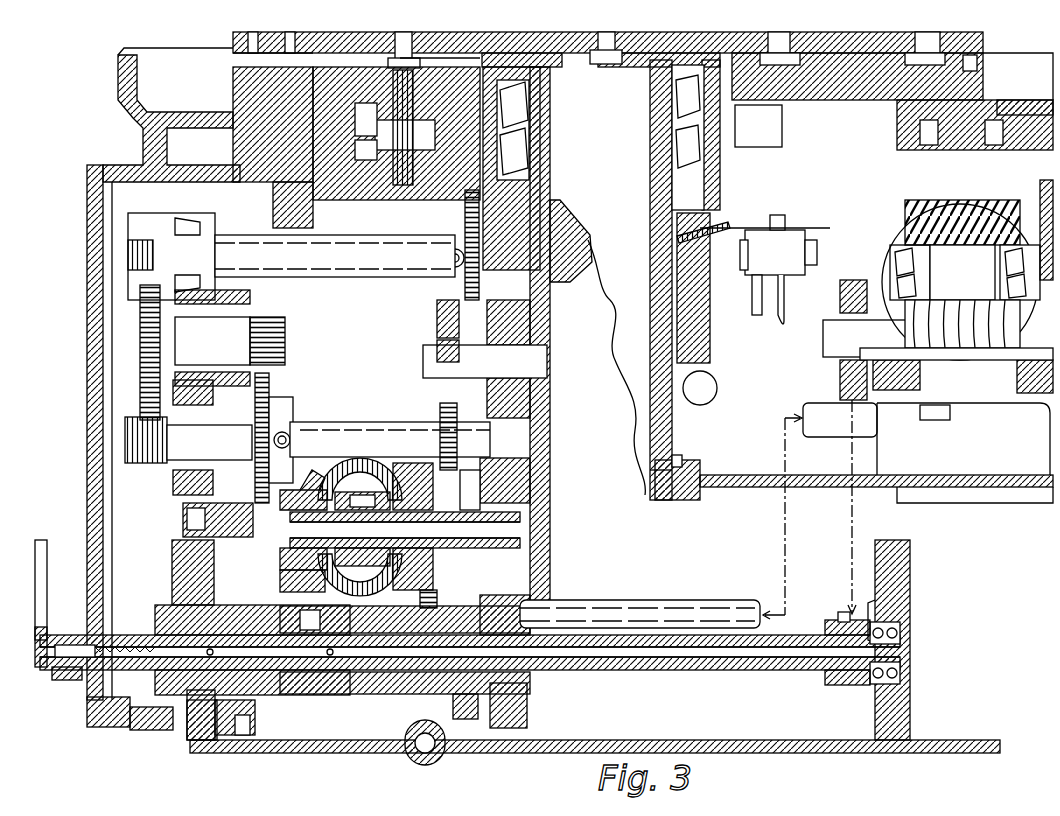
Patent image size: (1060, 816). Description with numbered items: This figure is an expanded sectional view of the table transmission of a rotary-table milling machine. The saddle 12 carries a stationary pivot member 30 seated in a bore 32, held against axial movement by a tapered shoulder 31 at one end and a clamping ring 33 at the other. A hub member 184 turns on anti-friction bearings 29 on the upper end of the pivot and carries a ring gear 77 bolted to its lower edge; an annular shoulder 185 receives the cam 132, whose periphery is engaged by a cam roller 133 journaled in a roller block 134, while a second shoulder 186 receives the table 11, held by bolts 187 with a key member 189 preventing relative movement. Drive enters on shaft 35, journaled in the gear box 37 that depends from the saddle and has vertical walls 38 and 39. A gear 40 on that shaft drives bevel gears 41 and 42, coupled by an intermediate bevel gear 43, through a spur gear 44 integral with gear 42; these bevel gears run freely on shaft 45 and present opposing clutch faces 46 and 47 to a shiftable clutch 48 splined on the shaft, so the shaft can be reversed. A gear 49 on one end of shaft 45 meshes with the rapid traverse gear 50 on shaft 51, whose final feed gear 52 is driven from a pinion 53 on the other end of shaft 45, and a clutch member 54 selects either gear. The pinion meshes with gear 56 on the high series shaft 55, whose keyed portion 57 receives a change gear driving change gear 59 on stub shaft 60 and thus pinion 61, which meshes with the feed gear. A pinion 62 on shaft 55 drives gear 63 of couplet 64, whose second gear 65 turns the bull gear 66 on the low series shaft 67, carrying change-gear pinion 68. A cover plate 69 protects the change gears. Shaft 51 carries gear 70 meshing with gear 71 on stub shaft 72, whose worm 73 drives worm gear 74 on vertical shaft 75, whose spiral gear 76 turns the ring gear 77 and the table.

The table 11 is at (472, 40).
The saddle 12 is at (117, 88).
The anti-friction bearings 29 is at (540, 160).
The stationary pivot member 30 is at (555, 190).
The tapered shoulder 31 is at (665, 225).
The bore 32 is at (655, 438).
The clamping ring 33 is at (690, 490).
The shaft 35 is at (712, 606).
The gear box or transmission housing 37 is at (317, 742).
The vertical wall 38 is at (185, 580).
The vertical wall 39 is at (535, 590).
The gear 40 is at (418, 594).
The bevel gear 41 is at (315, 470).
The bevel gear 42 is at (405, 468).
The intermediate bevel gear 43 is at (338, 462).
The spur gear 44 is at (442, 424).
The shaft 45 is at (195, 525).
The clutch face 46 is at (335, 580).
The clutch face 47 is at (375, 470).
The longitudinally shiftable clutch 48 is at (358, 580).
The gear 49 is at (520, 463).
The rapid traverse gear 50 is at (453, 704).
The shaft 51 is at (810, 660).
The final feed gear 52 is at (265, 715).
The pinion 53 is at (312, 568).
The shiftable clutch member 54 is at (368, 698).
The high series shaft 55 is at (375, 432).
The gear 56 is at (270, 385).
The keyed portion 57 is at (160, 465).
The change gear 59 is at (140, 383).
The stub shaft 60 is at (240, 320).
The pinion 61 is at (280, 318).
The pinion 62 is at (440, 408).
The gear 63 is at (440, 303).
The couplet 64 is at (440, 328).
The second gear 65 is at (500, 325).
The bull gear 66 is at (465, 212).
The low series shaft 67 is at (396, 250).
The pinion 68 is at (150, 222).
The cover plate 69 is at (90, 286).
The gear 70 is at (848, 620).
The gear 71 is at (840, 375).
The stub shaft 72 is at (845, 330).
The worm 73 is at (952, 365).
The worm gear 74 is at (892, 292).
The vertical shaft 75 is at (890, 266).
The spiral gear 76 is at (1005, 210).
The ring gear 77 is at (273, 218).
The cam 132 is at (375, 130).
The cam roller 133 is at (1012, 118).
The roller block 134 is at (1040, 100).
The hub member 184 is at (445, 240).
The annular shoulder 185 is at (383, 155).
The second shoulder 186 is at (395, 104).
The bolts 187 is at (465, 58).
The key member 189 is at (735, 105).